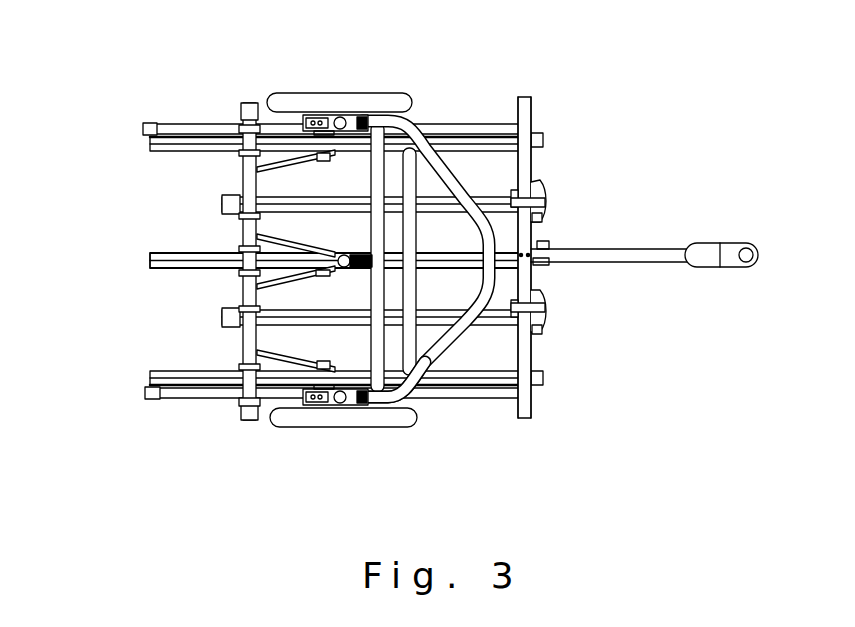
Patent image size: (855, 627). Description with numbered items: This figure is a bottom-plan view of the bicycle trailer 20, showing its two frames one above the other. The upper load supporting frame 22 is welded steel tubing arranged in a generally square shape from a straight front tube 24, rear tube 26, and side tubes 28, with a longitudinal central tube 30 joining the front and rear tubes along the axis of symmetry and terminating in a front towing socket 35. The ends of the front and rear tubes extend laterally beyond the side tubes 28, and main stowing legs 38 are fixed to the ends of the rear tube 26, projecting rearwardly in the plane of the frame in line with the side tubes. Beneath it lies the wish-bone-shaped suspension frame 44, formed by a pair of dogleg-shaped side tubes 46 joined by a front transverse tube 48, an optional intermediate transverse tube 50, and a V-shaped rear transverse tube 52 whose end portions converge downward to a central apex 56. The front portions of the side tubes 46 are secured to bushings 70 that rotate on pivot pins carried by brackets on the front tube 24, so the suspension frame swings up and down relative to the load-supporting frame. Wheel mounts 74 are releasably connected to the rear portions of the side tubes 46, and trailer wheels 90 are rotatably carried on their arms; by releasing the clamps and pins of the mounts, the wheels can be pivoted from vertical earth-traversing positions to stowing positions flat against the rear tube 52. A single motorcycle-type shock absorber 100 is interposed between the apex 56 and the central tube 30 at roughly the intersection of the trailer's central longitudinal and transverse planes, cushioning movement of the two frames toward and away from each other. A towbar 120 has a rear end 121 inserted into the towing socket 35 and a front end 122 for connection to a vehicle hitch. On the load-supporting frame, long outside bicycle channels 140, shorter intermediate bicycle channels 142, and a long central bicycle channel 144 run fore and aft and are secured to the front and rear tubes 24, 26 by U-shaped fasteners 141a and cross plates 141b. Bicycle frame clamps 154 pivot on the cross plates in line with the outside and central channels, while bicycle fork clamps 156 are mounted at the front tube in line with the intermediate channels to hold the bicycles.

The trailer 20 is at (553, 100).
The load supporting frame 22 is at (530, 99).
The front tube 24 is at (523, 162).
The rear tube 26 is at (247, 175).
The side tubes 28 is at (472, 122).
The central tube 30 is at (427, 252).
The front towing socket 35 is at (543, 262).
The main stowing legs 38 is at (177, 128).
The suspension frame 44 is at (427, 357).
The side tubes 46 is at (430, 136).
The front transverse tube 48 is at (541, 178).
The intermediate transverse tube 50 is at (415, 180).
The rear transverse tube 52 is at (375, 186).
The central apex 56 is at (360, 268).
The bushings 70 is at (512, 207).
The wheel mounts 74 is at (322, 117).
The trailer wheels 90 is at (378, 103).
The shock absorber 100 is at (357, 248).
The towbar 120 is at (632, 249).
The rear end 121 is at (545, 253).
The front end 122 is at (727, 268).
The outside bicycle channels 140 is at (152, 143).
The U-shaped fasteners 141a is at (243, 120).
The cross plates 141b is at (240, 124).
The intermediate bicycle channels 142 is at (225, 204).
The central bicycle channel 144 is at (150, 258).
The bicycle frame clamps 154 is at (252, 106).
The bicycle fork clamps 156 is at (543, 320).